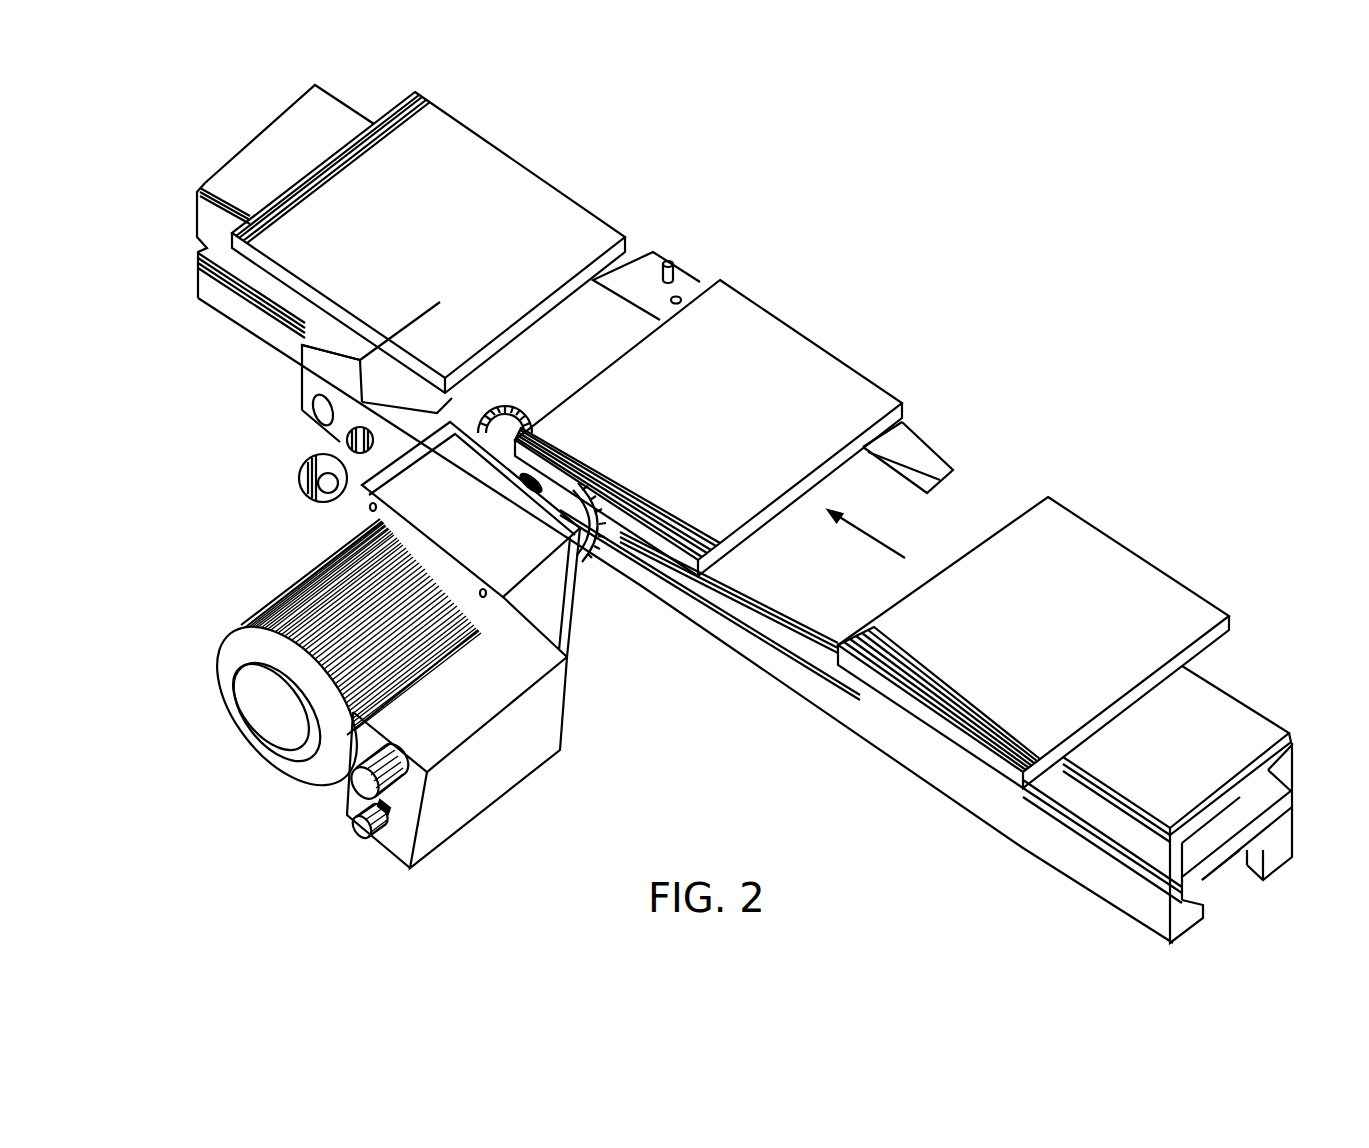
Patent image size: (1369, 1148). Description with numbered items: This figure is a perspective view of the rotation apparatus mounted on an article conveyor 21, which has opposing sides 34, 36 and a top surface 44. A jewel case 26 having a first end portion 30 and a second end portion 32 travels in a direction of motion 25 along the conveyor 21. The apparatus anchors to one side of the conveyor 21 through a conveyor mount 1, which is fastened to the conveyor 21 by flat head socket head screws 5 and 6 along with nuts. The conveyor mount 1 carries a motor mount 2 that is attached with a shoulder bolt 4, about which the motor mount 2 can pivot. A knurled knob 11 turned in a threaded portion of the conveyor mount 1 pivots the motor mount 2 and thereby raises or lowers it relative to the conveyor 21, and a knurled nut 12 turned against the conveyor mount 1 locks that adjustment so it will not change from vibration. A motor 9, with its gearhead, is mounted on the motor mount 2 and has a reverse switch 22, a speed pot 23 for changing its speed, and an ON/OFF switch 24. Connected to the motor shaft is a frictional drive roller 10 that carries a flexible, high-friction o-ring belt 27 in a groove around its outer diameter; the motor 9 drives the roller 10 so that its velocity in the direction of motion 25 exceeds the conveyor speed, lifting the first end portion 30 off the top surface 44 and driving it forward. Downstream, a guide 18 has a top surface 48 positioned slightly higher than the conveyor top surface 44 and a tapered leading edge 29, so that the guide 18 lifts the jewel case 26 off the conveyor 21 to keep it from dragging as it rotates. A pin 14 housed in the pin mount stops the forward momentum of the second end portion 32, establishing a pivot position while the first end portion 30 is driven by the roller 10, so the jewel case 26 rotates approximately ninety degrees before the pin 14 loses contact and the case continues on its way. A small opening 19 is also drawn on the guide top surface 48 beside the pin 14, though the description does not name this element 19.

The conveyor mount 1 is at (312, 384).
The motor mount 2 is at (303, 362).
The shoulder bolt 4 is at (352, 445).
The flat head socket head screw 5 is at (313, 410).
The flat head socket head screw 6 is at (362, 530).
The motor 9 is at (525, 552).
The frictional drive roller 10 is at (230, 643).
The knurled knob 11 is at (317, 497).
The knurled nut 12 is at (310, 483).
The pin 14 is at (670, 262).
The guide 18 is at (905, 430).
The hole 19 is at (678, 296).
The conveyor 21 is at (1217, 702).
The reverse switch 22 is at (390, 807).
The speed pot 23 is at (365, 783).
The ON/OFF switch 24 is at (363, 833).
The direction of motion 25 is at (890, 552).
The jewel case 26 is at (1105, 575).
The o-ring belt 27 is at (505, 415).
The tapered leading edge 29 is at (930, 455).
The first end portion 30 is at (450, 151).
The second end portion 32 is at (601, 253).
The side 34 is at (1133, 812).
The side 36 is at (1263, 717).
The top surface 44 is at (1190, 765).
The top surface 48 is at (669, 294).